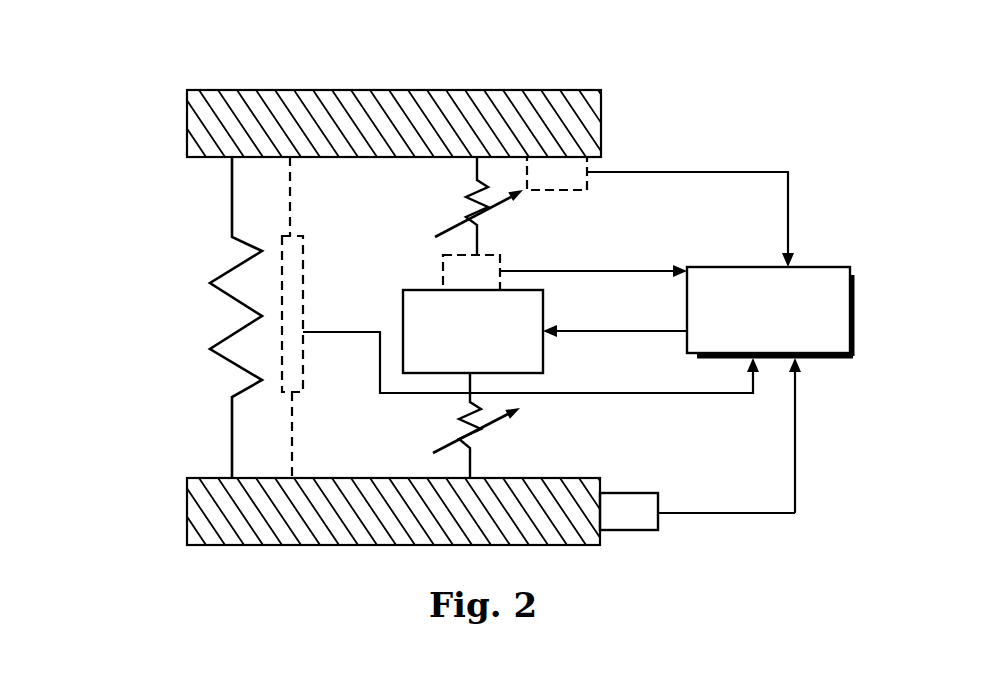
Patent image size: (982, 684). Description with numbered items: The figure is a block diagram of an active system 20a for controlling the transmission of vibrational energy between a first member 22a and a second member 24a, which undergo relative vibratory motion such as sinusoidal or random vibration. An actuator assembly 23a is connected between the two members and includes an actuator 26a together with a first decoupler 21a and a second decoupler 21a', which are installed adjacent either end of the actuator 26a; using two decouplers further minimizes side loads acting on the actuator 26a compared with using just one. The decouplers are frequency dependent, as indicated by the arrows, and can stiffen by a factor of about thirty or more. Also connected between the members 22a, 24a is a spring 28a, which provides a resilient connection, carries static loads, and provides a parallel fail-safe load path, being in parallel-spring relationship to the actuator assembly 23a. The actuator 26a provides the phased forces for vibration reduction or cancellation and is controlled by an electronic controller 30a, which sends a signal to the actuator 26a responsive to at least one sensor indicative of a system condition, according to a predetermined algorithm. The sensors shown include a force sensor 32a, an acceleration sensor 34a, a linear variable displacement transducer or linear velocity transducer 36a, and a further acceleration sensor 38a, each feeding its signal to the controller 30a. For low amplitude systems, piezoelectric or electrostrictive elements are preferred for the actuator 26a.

The system 20a is at (331, 569).
The first decoupler 21a is at (533, 206).
The second decoupler 21a' is at (539, 425).
The first member 22a is at (187, 109).
The actuator assembly 23a is at (412, 276).
The second member 24a is at (187, 497).
The actuator 26a is at (490, 343).
The spring 28a is at (236, 300).
The controller 30a is at (786, 323).
The force sensor 32a is at (489, 283).
The acceleration sensor 34a is at (575, 185).
The linear variable displacement transducer 36a is at (303, 362).
The acceleration sensor 38a is at (647, 526).